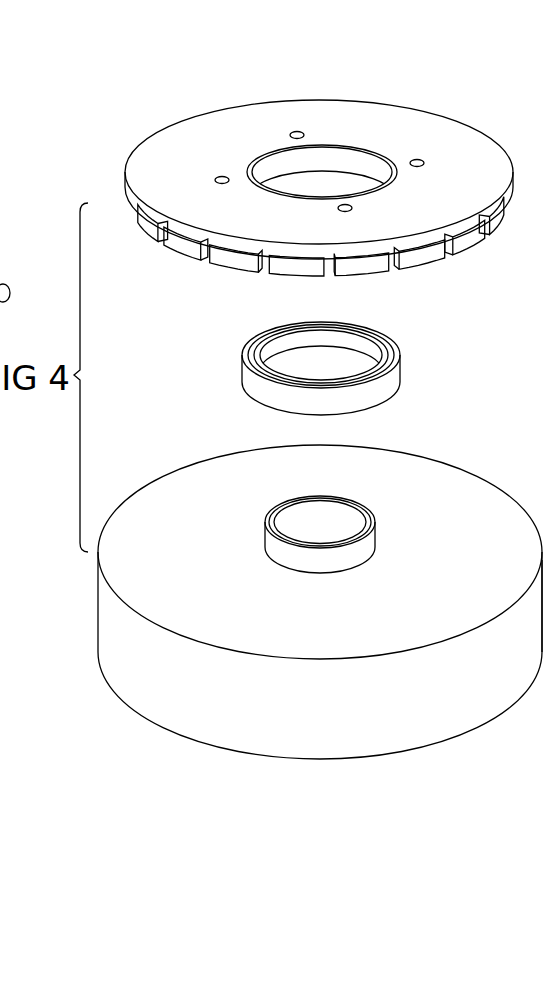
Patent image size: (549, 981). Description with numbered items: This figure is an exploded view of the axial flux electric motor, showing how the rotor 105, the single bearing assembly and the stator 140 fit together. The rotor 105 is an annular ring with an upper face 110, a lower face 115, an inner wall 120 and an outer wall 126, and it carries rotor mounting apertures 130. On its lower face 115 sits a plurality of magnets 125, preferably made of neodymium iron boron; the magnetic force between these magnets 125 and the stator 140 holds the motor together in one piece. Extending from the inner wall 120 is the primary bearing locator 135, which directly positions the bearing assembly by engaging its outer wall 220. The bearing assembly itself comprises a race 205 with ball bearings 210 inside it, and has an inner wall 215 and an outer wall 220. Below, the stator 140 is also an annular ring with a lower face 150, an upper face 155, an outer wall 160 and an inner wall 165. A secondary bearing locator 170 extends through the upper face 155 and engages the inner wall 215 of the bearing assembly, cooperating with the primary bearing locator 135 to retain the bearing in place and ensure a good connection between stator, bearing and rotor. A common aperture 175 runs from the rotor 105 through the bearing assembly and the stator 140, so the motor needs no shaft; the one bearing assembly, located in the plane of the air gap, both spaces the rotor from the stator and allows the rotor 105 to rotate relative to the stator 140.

The rotor 105 is at (281, 64).
The upper face 110 is at (458, 147).
The lower face 115 is at (397, 280).
The inner wall 120 is at (331, 151).
The magnets 125 is at (240, 263).
The outer wall 126 is at (157, 223).
The rotor mounting apertures 130 is at (222, 174).
The primary bearing locator 135 is at (282, 164).
The stator 140 is at (300, 795).
The lower face 150 is at (172, 746).
The upper face 155 is at (192, 497).
The outer wall 160 is at (410, 713).
The inner wall 165 is at (340, 520).
The secondary bearing locator 170 is at (292, 555).
The aperture 175 is at (343, 187).
The race 205 is at (260, 337).
The ball bearings 210 is at (250, 357).
The inner wall 215 is at (347, 345).
The outer wall 220 is at (367, 395).